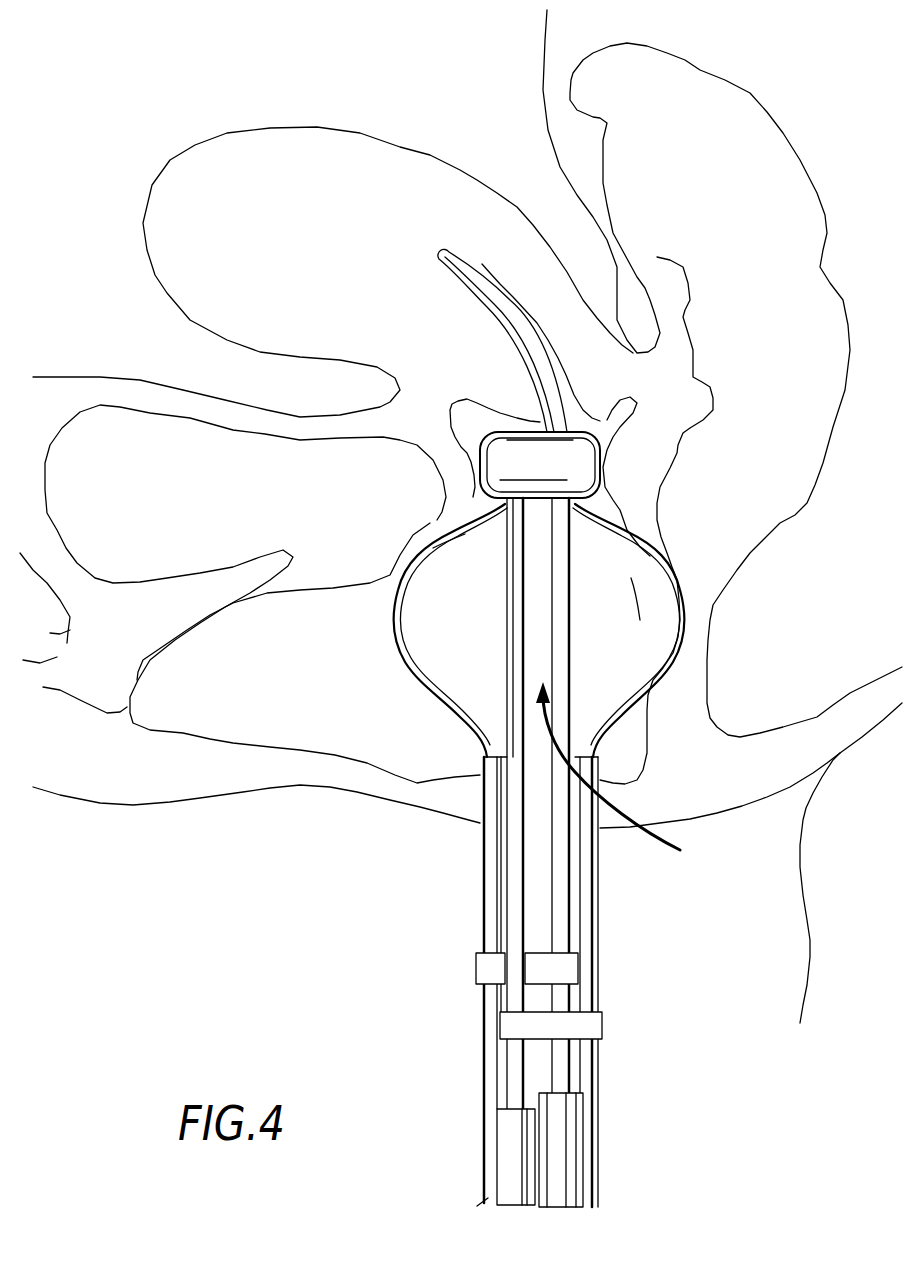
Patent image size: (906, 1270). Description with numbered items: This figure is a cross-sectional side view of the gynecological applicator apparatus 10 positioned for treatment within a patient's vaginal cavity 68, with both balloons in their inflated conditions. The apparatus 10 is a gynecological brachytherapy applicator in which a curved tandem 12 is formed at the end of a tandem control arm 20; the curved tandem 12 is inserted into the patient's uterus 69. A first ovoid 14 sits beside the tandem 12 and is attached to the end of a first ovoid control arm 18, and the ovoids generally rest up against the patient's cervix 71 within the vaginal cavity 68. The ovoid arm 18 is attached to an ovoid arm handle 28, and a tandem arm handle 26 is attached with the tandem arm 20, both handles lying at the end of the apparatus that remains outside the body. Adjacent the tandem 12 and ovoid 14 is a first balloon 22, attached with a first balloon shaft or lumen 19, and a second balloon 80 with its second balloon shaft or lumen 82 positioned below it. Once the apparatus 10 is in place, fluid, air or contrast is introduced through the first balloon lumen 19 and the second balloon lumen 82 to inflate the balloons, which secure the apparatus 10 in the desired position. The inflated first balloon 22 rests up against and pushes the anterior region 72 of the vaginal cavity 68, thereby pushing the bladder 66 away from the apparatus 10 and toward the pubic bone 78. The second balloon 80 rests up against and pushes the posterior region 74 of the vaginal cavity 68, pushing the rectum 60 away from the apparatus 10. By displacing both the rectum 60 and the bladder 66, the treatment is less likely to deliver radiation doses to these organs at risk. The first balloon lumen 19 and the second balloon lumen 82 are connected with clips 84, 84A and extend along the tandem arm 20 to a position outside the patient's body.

The gynecological applicator apparatus 10 is at (456, 886).
The curved tandem 12 is at (482, 288).
The first ovoid 14 is at (577, 465).
The first ovoid control arm 18 is at (512, 827).
The first balloon shaft 19 is at (490, 1058).
The tandem control arm 20 is at (560, 880).
The first balloon 22 is at (393, 638).
The tandem arm handle 26 is at (568, 1146).
The ovoid arm handle 28 is at (503, 1147).
The rectum 60 is at (768, 239).
The bladder 66 is at (160, 507).
The vaginal cavity 68 is at (631, 775).
The uterus 69 is at (301, 245).
The cervix 71 is at (525, 403).
The anterior region 72 is at (424, 558).
The posterior region 74 is at (666, 616).
The pubic bone 78 is at (70, 630).
The second balloon 80 is at (653, 561).
The second balloon shaft 82 is at (585, 1077).
The attachment clip 84 is at (560, 968).
The clip 84A is at (587, 1026).